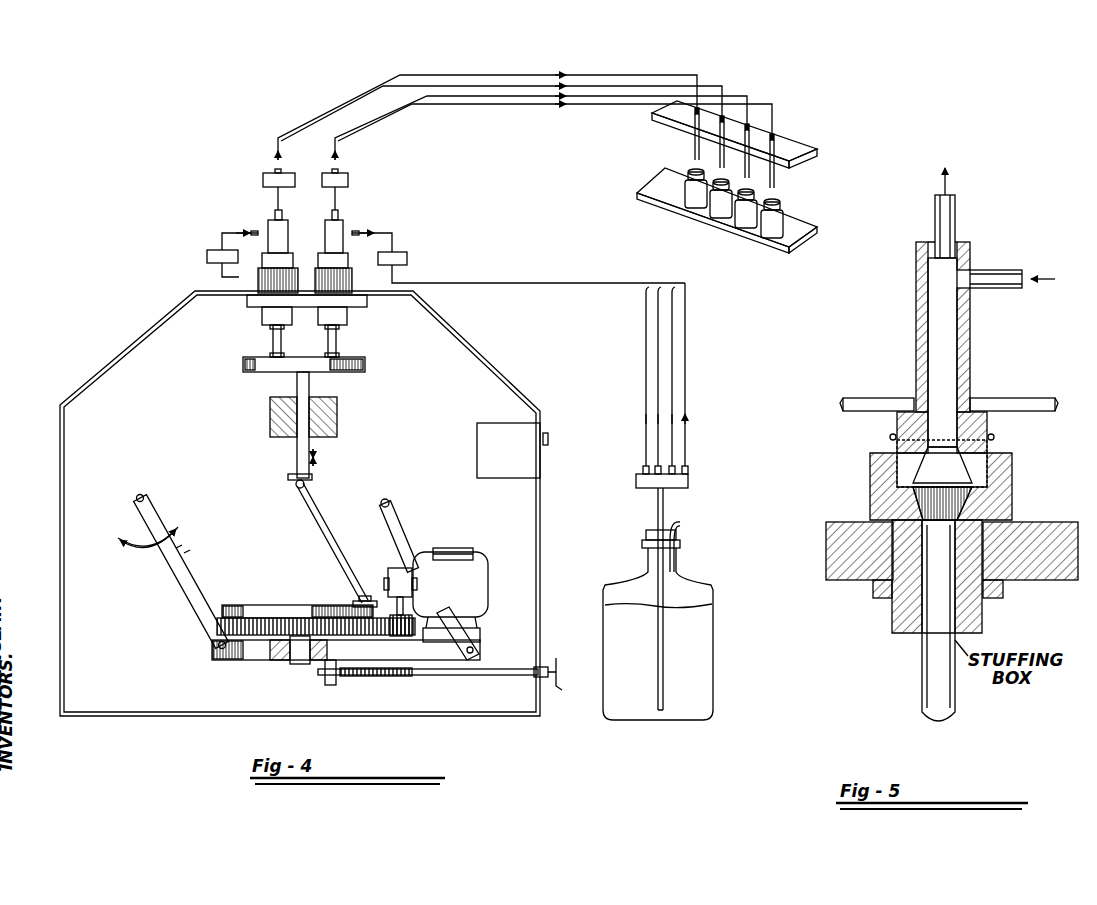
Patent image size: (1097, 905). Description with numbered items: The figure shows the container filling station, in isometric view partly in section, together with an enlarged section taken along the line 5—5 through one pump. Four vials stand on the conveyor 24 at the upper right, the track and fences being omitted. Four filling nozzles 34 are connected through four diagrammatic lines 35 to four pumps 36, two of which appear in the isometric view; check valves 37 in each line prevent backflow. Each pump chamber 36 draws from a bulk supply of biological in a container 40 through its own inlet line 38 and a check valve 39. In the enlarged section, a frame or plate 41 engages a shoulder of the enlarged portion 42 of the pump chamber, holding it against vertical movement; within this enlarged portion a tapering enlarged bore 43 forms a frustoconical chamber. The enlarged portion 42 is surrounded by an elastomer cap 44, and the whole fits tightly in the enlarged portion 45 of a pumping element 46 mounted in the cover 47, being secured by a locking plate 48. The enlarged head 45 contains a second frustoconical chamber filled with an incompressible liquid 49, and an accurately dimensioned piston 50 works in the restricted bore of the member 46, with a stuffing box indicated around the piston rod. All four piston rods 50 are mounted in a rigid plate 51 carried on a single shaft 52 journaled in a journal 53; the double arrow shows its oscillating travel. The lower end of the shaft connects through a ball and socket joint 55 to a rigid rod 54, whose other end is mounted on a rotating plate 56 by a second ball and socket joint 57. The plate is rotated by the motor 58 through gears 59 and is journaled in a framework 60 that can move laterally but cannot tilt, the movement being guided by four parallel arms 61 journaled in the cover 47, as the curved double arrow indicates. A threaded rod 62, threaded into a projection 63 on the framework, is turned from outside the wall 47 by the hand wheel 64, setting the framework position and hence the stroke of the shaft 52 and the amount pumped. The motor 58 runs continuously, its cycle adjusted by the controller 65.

In FIG. 4, the section line 5— 5 is at (333, 200).
In FIG. 4, the conveyor 24 is at (655, 186).
In FIG. 4, the filling nozzles 34 is at (693, 144).
In FIG. 4, the lines 35 is at (496, 103).
In FIG. 4, the pumps 36 is at (322, 228).
In FIG. 5, the pumps 36 is at (916, 286).
In FIG. 4, the check valves 37 is at (326, 173).
In FIG. 4, the inlet line 38 is at (672, 324).
In FIG. 4, the check valve 39 is at (210, 250).
In FIG. 4, the container 40 is at (714, 648).
In FIG. 5, the frame or plate 41 is at (980, 399).
In FIG. 5, the enlarged portion 42 is at (990, 426).
In FIG. 5, the tapering enlarged bore 43 is at (942, 465).
In FIG. 5, the cap 44 is at (992, 446).
In FIG. 5, the enlarged portion 45 is at (1012, 488).
In FIG. 5, the pumping elements 46 is at (892, 618).
In FIG. 4, the cover 47 is at (163, 432).
In FIG. 5, the cover 47 is at (835, 522).
In FIG. 5, the locking plate 48 is at (1003, 591).
In FIG. 5, the liquid 49 is at (925, 500).
In FIG. 4, the pistons 50 is at (328, 339).
In FIG. 5, the pistons 50 is at (921, 675).
In FIG. 4, the rigid plate 51 is at (365, 366).
In FIG. 4, the rod or shaft 52 is at (312, 388).
In FIG. 4, the journal 53 is at (337, 426).
In FIG. 4, the rigid rod 54 is at (316, 519).
In FIG. 4, the ball and socket joint 55 is at (290, 479).
In FIG. 4, the rotating plate 56 is at (283, 605).
In FIG. 4, the second ball and socket joint 57 is at (366, 597).
In FIG. 4, the motor 58 is at (460, 552).
In FIG. 4, the gears 59 is at (238, 605).
In FIG. 4, the framework 60 is at (250, 660).
In FIG. 4, the parallel arms 61 is at (388, 500).
In FIG. 4, the threaded rod 62 is at (500, 668).
In FIG. 4, the projection 63 is at (331, 685).
In FIG. 4, the hand wheel 64 is at (557, 660).
In FIG. 4, the controller 65 is at (488, 436).